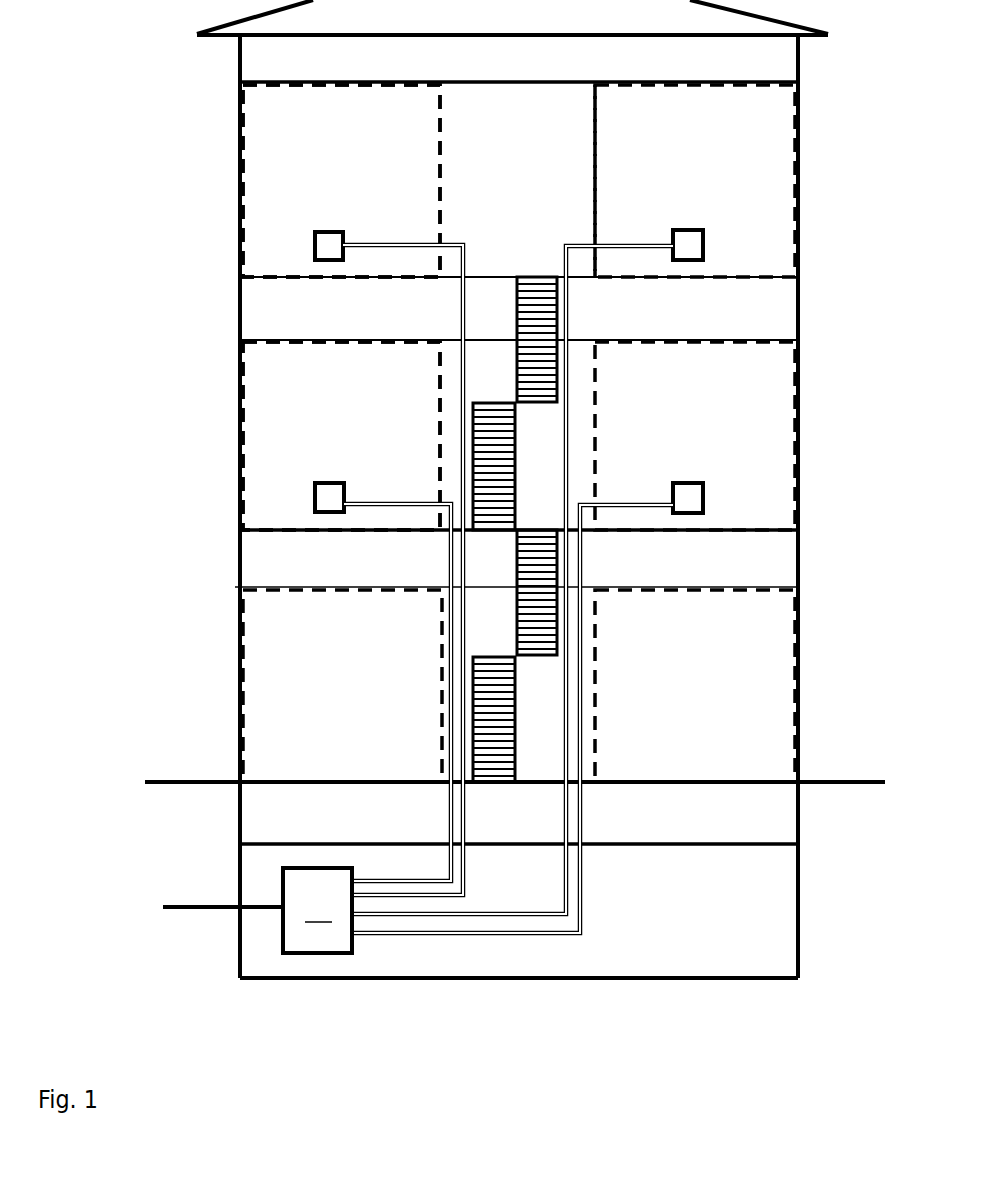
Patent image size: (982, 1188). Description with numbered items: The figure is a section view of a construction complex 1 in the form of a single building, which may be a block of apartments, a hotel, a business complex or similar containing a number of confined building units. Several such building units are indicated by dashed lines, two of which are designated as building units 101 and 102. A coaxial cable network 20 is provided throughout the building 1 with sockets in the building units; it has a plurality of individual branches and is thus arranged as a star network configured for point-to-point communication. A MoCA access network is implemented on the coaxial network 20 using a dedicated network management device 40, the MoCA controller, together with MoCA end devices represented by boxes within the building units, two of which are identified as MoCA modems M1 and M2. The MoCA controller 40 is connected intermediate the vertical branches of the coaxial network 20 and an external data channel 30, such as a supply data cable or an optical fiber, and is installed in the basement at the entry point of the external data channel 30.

The construction complex 1 is at (115, 67).
The building unit 101 is at (340, 129).
The building unit 102 is at (341, 382).
The MoCA modem M1 is at (334, 234).
The MoCA modem M2 is at (331, 483).
The coaxial cable network 20 is at (588, 885).
The network management device 40 is at (332, 922).
The external data channel 30 is at (188, 913).